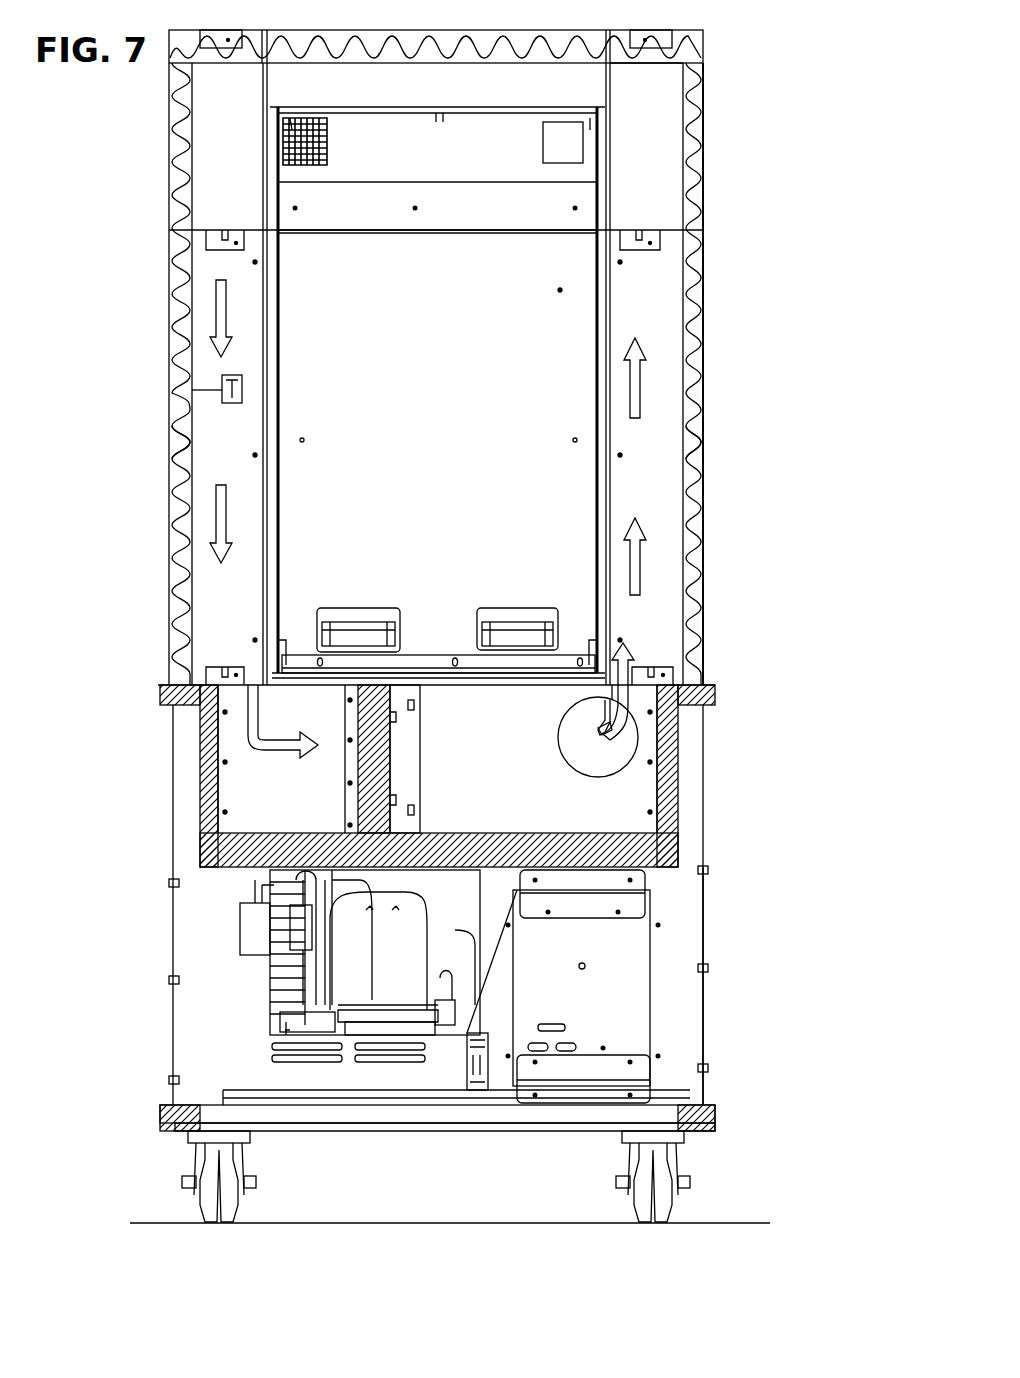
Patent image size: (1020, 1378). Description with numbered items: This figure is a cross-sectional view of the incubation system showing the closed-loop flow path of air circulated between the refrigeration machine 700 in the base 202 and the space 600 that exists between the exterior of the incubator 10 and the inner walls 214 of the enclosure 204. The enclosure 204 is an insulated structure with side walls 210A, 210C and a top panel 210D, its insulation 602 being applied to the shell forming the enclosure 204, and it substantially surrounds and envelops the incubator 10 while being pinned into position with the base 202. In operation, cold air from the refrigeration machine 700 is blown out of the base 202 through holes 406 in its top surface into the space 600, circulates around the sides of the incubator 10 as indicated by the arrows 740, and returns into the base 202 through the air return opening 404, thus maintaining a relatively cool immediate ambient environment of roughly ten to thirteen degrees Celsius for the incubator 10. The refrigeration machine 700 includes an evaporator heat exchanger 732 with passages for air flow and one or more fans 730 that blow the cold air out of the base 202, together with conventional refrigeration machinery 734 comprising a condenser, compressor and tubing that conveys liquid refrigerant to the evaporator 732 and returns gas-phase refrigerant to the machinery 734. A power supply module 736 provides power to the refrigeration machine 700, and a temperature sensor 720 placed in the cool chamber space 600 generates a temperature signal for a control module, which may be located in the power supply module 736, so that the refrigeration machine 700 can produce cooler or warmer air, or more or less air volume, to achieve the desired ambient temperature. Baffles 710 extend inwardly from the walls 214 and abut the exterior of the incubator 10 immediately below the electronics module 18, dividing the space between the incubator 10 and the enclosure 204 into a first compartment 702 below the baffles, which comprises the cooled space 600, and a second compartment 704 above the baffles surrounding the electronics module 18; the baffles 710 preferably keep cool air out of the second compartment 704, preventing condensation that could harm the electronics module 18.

The refrigeration machine 700 is at (148, 903).
The top panel 210D is at (570, 30).
The side wall 210A is at (178, 348).
The side wall 210C is at (705, 485).
The enclosure 204 is at (705, 380).
The insulation 602 is at (705, 560).
The inner walls 214 is at (690, 438).
The second compartment 704 is at (645, 160).
The first compartment 702 is at (650, 312).
The baffles 710 is at (232, 230).
The arrows 740 is at (214, 300).
The temperature sensor 720 is at (233, 404).
The space 600 is at (243, 608).
The incubator 10 is at (448, 394).
The electronics module 18 is at (481, 169).
The air return opening 404 is at (212, 712).
The holes 406 is at (670, 728).
The evaporator heat exchanger 732 is at (355, 796).
The fans 730 is at (625, 752).
The base 202 is at (705, 918).
The refrigeration machinery 734 is at (232, 1014).
The power supply module 736 is at (615, 995).